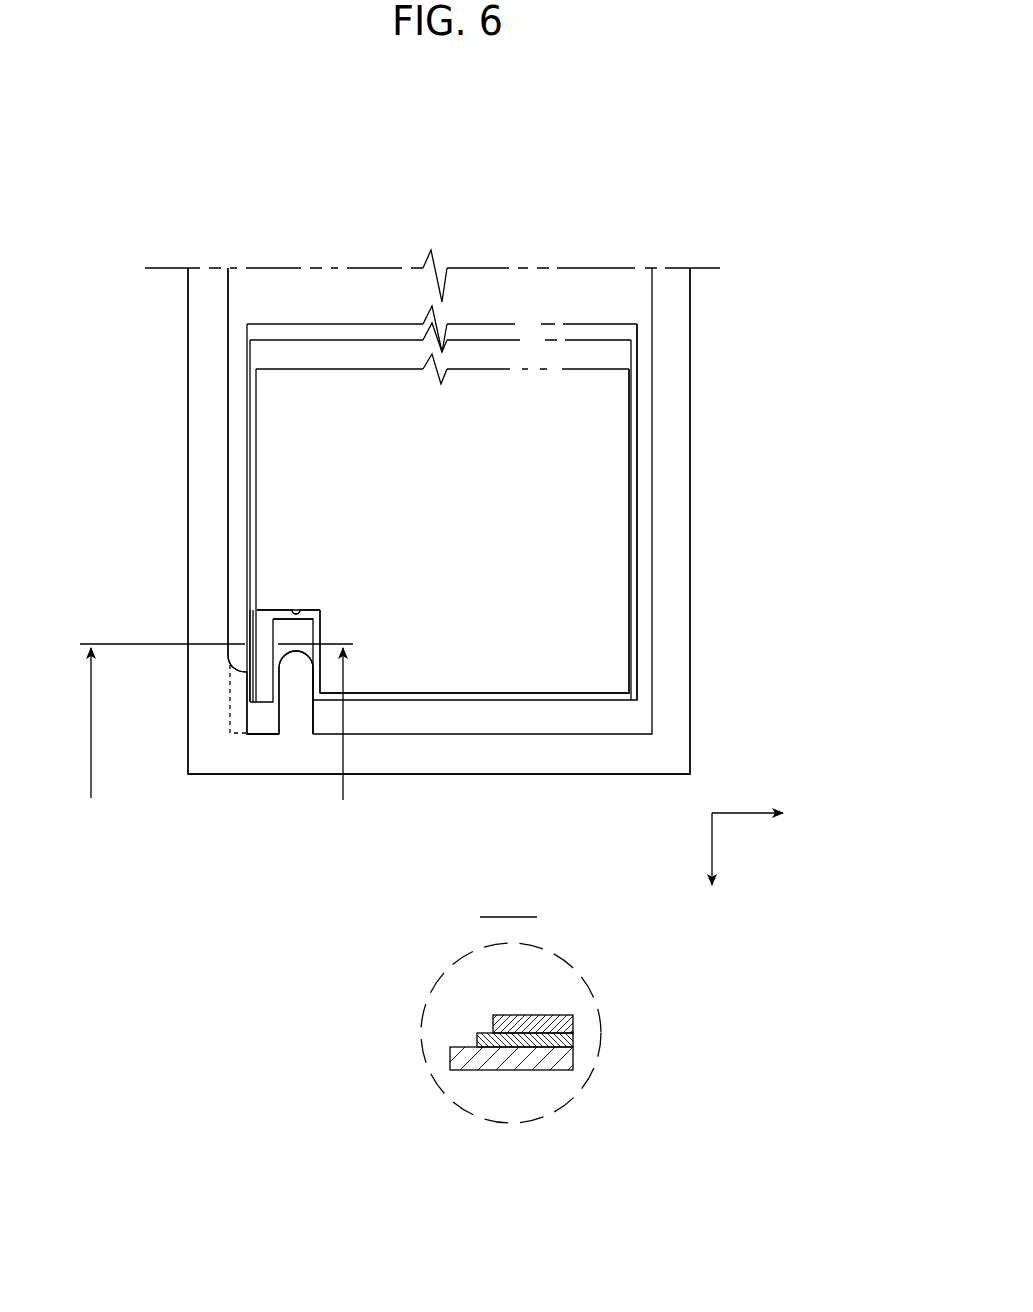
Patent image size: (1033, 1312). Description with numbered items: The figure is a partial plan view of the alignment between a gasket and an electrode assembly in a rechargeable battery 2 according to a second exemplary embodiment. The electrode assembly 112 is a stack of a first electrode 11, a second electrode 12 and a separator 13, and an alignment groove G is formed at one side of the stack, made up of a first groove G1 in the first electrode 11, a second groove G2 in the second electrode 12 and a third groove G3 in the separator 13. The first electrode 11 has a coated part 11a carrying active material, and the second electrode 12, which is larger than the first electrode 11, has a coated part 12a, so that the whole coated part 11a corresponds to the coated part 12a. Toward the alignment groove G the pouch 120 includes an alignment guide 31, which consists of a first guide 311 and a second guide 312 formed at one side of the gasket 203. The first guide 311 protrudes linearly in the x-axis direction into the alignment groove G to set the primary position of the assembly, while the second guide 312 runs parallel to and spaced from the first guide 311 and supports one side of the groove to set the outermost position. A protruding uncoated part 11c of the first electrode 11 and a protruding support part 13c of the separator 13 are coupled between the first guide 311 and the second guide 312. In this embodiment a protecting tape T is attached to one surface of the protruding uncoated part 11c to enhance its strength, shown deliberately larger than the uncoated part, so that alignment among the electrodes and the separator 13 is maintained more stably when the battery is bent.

The rechargeable battery 2 is at (440, 143).
The first electrode 11 is at (584, 364).
The coated part 11a is at (597, 580).
The protruding uncoated part 11c is at (267, 633).
The second electrode 12 is at (479, 318).
The coated part 12a is at (253, 492).
The separator 13 is at (533, 335).
The protruding support part 13c is at (257, 682).
The alignment guide 31 is at (337, 890).
The first guide 311 is at (292, 673).
The second guide 312 is at (240, 700).
The electrode assembly 112 is at (639, 447).
The gasket 203 is at (670, 503).
The pouch 120 is at (439, 521).
The protecting tape T is at (232, 661).
The alignment groove G is at (404, 543).
The first groove G1 is at (296, 611).
The second groove G2 is at (318, 633).
The third groove G3 is at (300, 633).